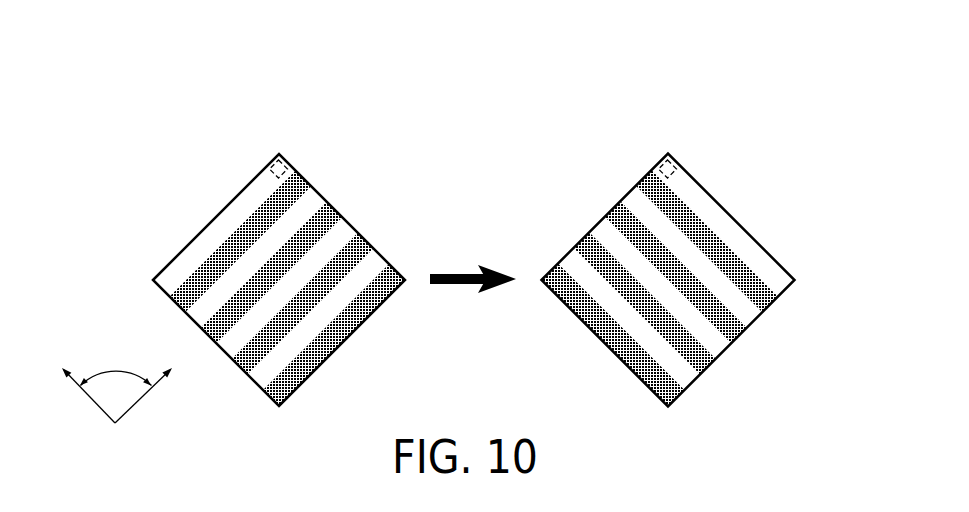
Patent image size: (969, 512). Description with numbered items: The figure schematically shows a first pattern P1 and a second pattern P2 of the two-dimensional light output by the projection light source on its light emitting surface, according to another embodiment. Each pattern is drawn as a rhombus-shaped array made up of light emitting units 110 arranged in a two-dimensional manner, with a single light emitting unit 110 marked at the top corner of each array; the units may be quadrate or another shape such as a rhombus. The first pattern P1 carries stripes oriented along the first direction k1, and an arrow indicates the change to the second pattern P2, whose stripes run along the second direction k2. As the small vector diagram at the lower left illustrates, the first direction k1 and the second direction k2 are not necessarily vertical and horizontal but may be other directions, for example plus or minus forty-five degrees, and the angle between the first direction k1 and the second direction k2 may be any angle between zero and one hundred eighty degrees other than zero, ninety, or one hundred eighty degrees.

The first pattern P1 is at (240, 202).
The second pattern P2 is at (630, 202).
The light emitting unit 110 is at (292, 158).
The first direction k1 is at (81, 383).
The second direction k2 is at (149, 383).